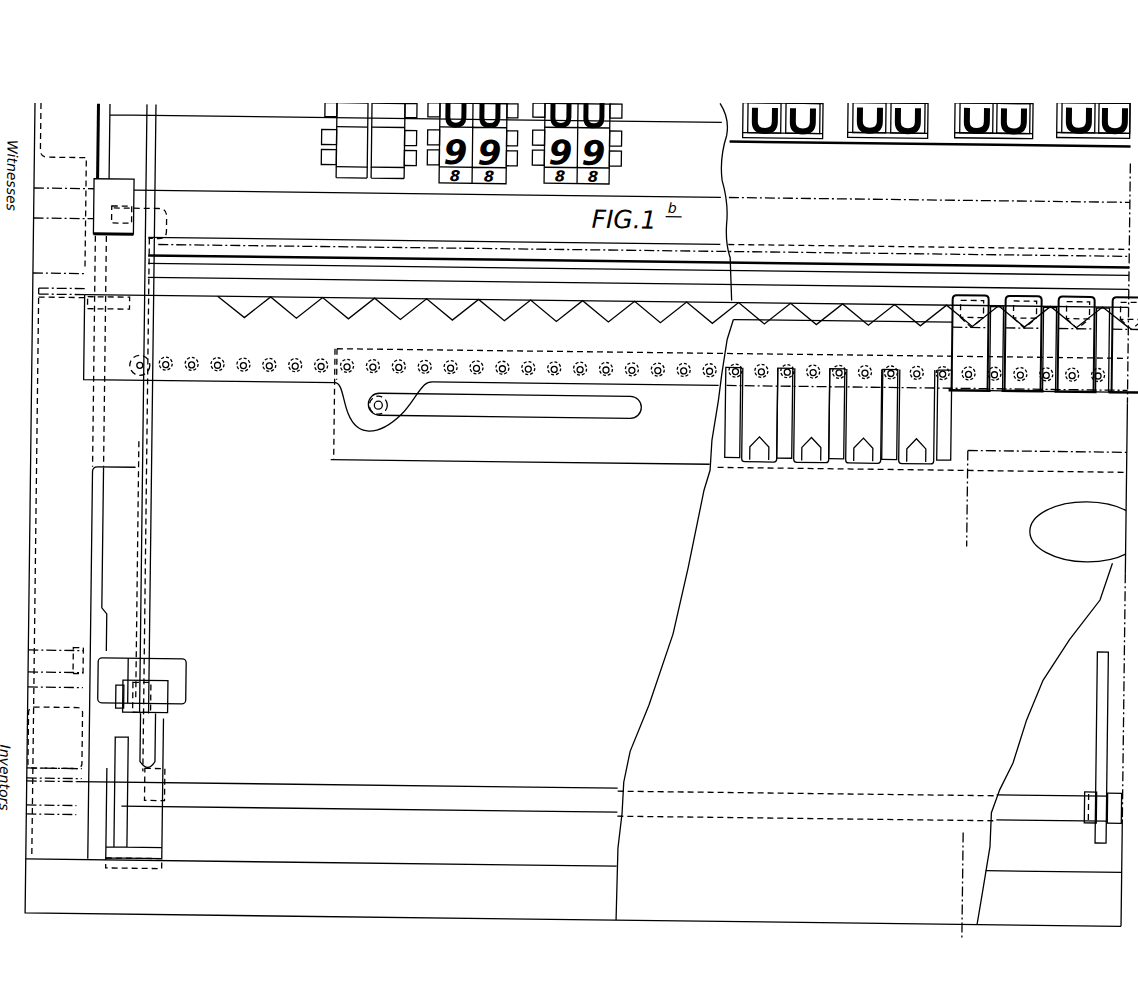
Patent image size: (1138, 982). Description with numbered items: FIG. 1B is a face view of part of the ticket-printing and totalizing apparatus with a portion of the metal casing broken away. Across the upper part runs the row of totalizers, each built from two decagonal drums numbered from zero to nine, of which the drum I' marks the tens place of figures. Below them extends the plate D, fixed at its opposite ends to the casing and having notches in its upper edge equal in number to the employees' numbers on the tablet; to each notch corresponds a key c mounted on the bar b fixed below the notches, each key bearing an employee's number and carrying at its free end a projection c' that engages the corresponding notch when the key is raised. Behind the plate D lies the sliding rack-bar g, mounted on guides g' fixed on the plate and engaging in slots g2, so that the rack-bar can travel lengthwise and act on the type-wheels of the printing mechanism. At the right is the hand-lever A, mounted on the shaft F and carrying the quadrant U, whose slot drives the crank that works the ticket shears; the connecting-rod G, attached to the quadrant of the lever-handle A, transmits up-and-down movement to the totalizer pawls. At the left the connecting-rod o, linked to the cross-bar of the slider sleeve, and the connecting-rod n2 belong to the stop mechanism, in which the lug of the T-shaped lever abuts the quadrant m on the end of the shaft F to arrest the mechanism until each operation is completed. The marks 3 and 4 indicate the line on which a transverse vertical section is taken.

The connecting-rod n2 is at (101, 143).
The connecting-rod G is at (156, 147).
The decagonal drum I' is at (369, 141).
The notched plate D is at (629, 356).
The sliding rack-bar g is at (525, 407).
The guide g' is at (388, 423).
The slot g2 is at (498, 397).
The key c is at (921, 415).
The projection c' is at (832, 468).
The bar b is at (1002, 370).
The section line 3 is at (1037, 493).
The section line 4 is at (951, 884).
The hand-lever A is at (1057, 714).
The quadrant U is at (1089, 747).
The shaft F is at (1059, 796).
The connecting-rod o is at (149, 566).
The quadrant m is at (140, 552).